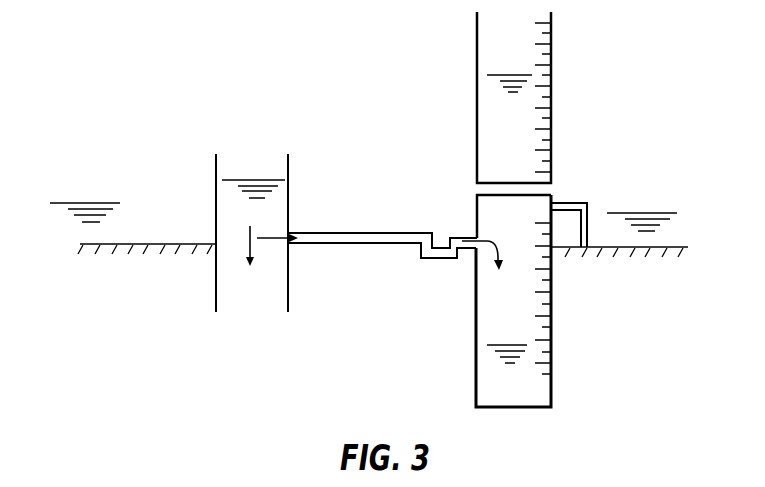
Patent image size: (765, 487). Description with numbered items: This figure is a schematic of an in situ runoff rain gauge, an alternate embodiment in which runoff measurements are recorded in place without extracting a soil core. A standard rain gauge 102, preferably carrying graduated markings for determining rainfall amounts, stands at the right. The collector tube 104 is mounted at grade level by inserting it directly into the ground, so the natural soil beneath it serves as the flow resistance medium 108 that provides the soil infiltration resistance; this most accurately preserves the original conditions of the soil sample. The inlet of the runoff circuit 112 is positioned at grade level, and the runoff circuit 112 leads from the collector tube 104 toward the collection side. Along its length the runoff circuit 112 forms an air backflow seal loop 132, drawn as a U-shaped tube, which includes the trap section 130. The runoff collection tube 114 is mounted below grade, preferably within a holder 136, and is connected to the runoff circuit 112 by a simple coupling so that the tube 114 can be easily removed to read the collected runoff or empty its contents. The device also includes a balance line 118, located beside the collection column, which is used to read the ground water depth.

The rain gauge 102 is at (552, 62).
The collector tube 104 is at (216, 171).
The flow resistance medium 108 is at (225, 338).
The runoff circuit 112 is at (400, 232).
The runoff collection tube 114 is at (476, 386).
The balance line 118 is at (570, 200).
The trap 130 is at (403, 247).
The air backflow seal loop 132 is at (448, 262).
The holder 136 is at (551, 360).